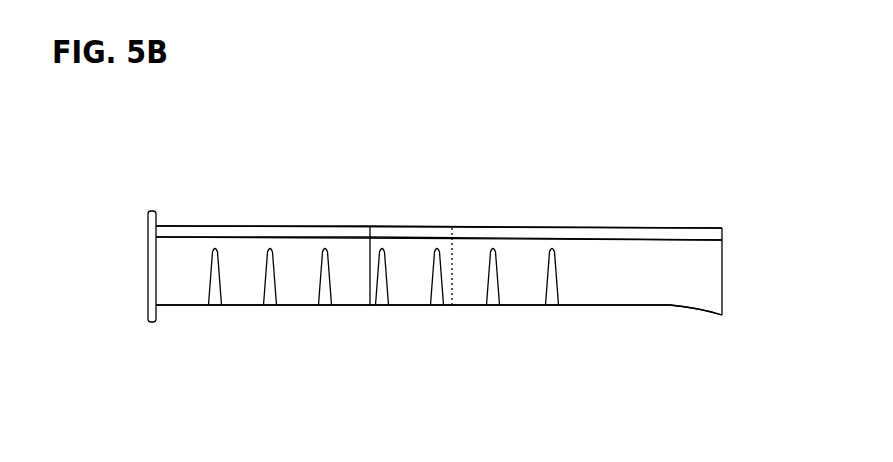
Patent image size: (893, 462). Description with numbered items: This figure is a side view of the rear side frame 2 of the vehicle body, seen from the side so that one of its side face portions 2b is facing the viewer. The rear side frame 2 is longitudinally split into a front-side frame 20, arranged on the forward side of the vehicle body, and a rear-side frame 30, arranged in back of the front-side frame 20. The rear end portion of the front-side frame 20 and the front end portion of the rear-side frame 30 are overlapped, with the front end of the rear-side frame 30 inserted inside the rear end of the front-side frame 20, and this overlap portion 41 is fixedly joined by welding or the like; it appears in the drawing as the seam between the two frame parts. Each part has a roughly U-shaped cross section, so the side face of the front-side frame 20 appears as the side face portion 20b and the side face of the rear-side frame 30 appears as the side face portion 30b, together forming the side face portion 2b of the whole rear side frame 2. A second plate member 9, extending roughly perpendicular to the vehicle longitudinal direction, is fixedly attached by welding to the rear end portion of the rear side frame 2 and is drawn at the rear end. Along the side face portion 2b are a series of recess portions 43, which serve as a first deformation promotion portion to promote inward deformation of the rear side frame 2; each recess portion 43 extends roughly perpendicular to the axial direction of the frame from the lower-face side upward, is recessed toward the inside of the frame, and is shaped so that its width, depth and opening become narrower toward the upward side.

The rear side frame 2 is at (623, 226).
The second plate member 9 is at (153, 210).
The rear-side frame 30 is at (250, 226).
The front-side frame 20 is at (541, 226).
The overlap portion 41 is at (402, 247).
The recess portion 43 is at (217, 293).
The side face portion of rear-side frame 30b is at (290, 293).
The side face portion of front-side frame 20b is at (522, 293).
The side face portion 2b is at (666, 293).